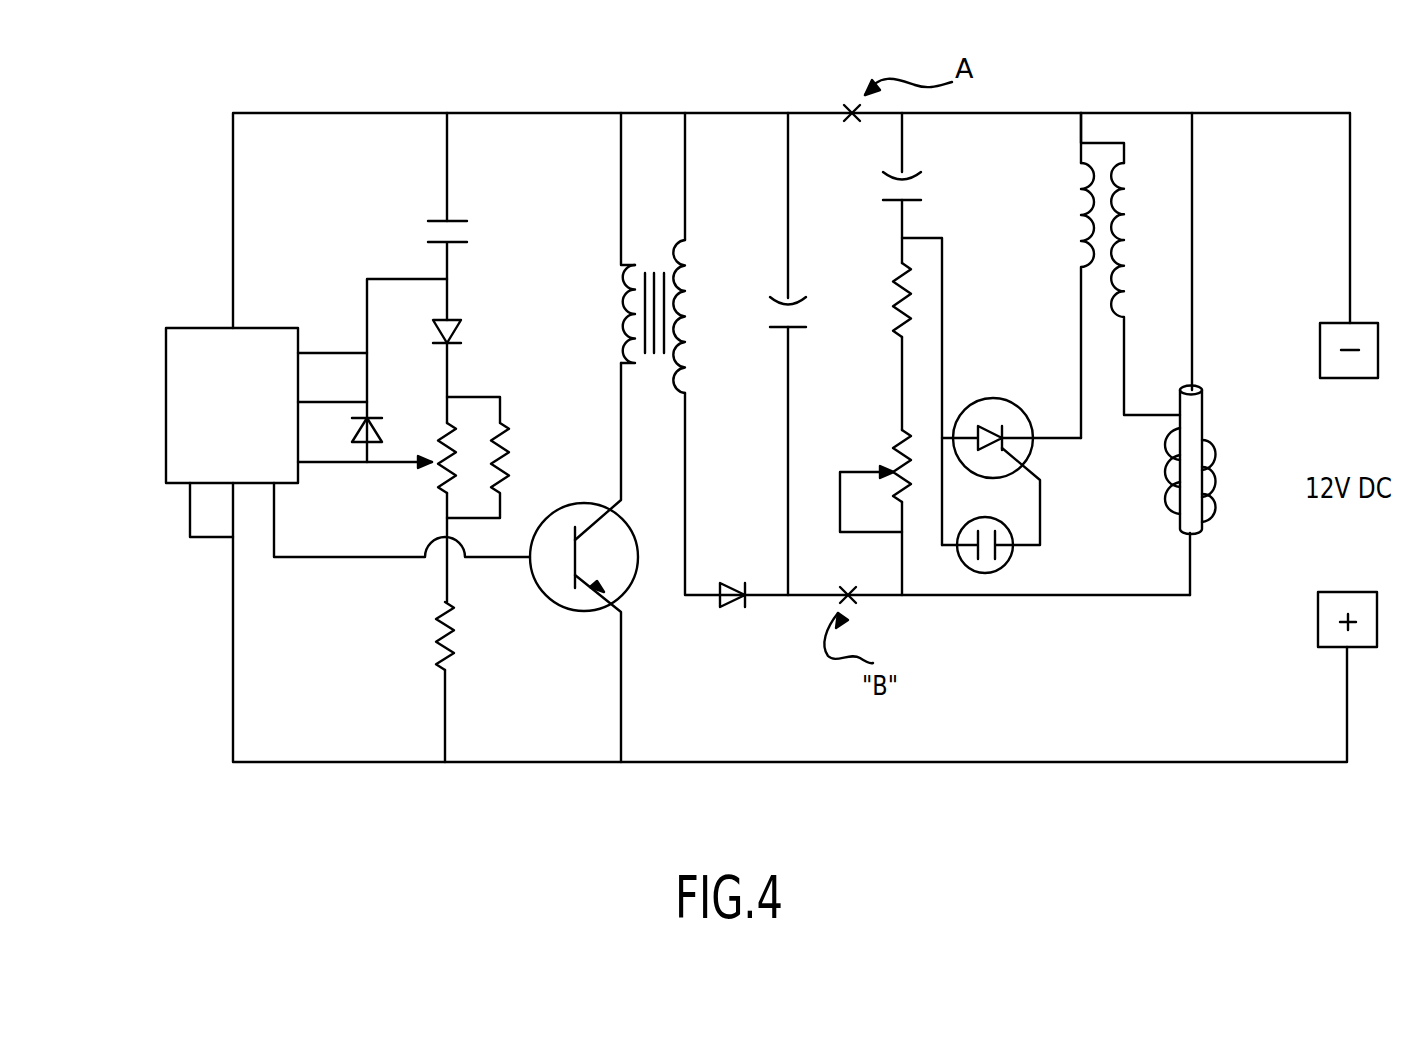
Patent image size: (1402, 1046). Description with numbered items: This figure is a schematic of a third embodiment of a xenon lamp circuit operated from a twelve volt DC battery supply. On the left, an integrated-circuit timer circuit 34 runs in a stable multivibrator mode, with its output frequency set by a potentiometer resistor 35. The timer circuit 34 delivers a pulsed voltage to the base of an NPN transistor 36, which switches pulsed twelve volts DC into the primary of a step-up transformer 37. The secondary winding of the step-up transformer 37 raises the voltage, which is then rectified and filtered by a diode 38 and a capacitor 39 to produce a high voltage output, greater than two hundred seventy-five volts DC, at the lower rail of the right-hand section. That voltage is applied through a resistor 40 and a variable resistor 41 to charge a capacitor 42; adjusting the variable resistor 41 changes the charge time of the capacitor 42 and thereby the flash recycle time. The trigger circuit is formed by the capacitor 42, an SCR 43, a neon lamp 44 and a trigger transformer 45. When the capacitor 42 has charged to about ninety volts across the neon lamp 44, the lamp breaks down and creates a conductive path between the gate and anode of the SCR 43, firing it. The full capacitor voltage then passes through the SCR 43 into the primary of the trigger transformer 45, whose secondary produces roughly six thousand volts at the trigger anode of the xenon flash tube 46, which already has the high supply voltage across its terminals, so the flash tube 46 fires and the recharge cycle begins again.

The 555 timer circuit 34 is at (168, 410).
The potentiometer resistor 35 is at (473, 457).
The NPN transistor 36 is at (584, 562).
The step-up transformer 37 is at (653, 337).
The diode 38 is at (733, 571).
The capacitor 39 is at (800, 343).
The resistor 40 is at (882, 295).
The variable resistor 41 is at (875, 475).
The capacitor 42 is at (929, 217).
The SCR 43 is at (1011, 447).
The neon lamp 44 is at (1005, 553).
The trigger transformer 45 is at (1130, 300).
The xenon flash tube 46 is at (1215, 491).